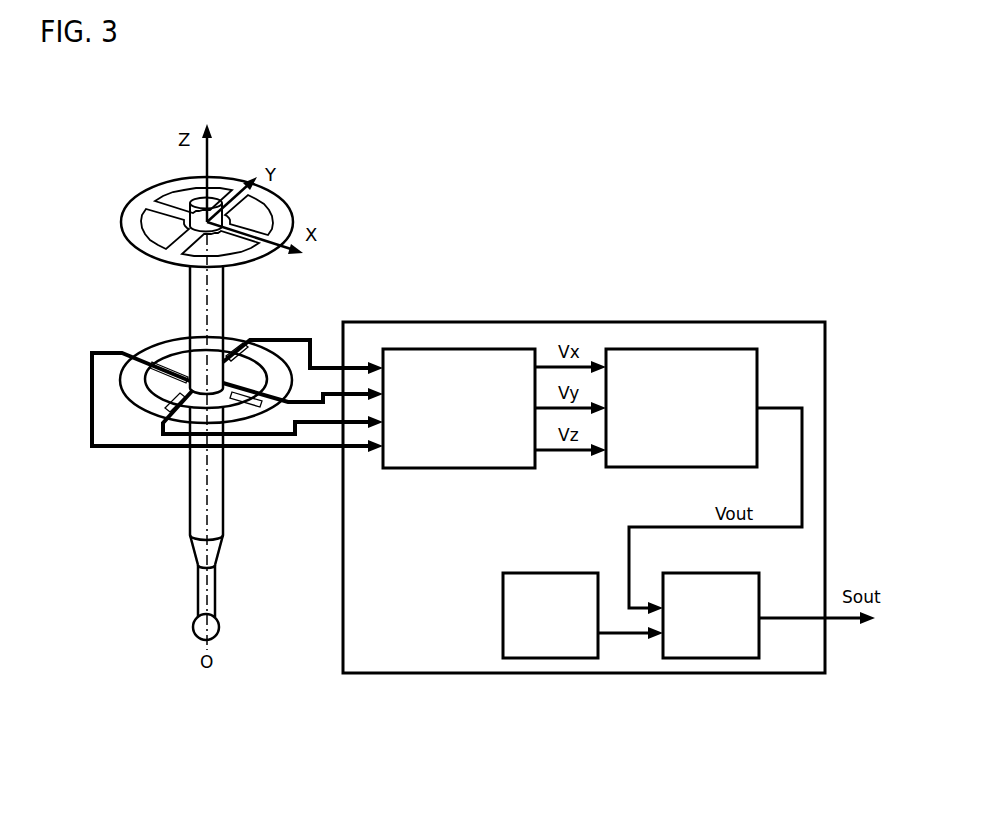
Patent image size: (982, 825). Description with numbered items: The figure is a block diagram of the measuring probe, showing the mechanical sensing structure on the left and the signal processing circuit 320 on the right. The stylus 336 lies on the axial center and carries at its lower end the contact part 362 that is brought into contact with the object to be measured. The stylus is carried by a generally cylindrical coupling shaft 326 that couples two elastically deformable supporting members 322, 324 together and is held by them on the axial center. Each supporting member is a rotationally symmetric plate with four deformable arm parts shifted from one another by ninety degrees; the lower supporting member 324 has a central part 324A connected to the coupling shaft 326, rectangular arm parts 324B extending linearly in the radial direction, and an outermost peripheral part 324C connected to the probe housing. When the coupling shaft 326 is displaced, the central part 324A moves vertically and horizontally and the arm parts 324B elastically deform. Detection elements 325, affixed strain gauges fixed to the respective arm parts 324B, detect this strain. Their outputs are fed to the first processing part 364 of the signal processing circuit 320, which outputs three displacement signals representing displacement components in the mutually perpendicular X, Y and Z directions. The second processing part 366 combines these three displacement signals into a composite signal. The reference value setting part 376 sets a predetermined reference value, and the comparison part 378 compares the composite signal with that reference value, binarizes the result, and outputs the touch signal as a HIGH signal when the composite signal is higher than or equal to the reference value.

The signal processing circuit 320 is at (477, 322).
The supporting member 322 is at (273, 211).
The supporting member 324 is at (263, 358).
The central part 324A is at (186, 378).
The arm parts 324B is at (184, 394).
The peripheral part 324C is at (198, 420).
The detection elements 325 is at (158, 356).
The coupling shaft 326 is at (217, 306).
The stylus 336 is at (264, 503).
The contact part 362 is at (221, 624).
The first processing part 364 is at (477, 419).
The second processing part 366 is at (699, 419).
The reference value setting part 376 is at (527, 574).
The comparison part 378 is at (729, 630).